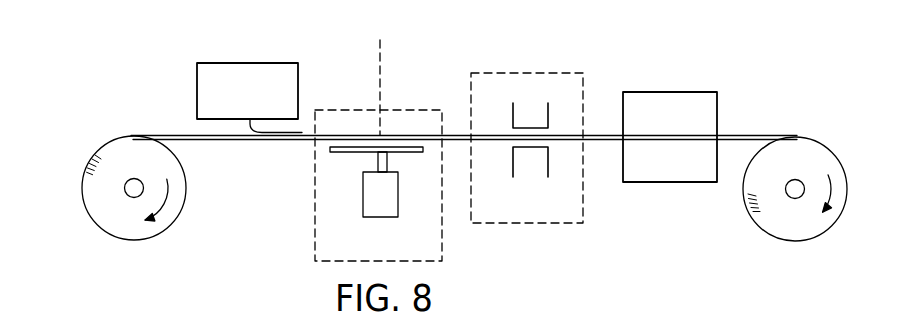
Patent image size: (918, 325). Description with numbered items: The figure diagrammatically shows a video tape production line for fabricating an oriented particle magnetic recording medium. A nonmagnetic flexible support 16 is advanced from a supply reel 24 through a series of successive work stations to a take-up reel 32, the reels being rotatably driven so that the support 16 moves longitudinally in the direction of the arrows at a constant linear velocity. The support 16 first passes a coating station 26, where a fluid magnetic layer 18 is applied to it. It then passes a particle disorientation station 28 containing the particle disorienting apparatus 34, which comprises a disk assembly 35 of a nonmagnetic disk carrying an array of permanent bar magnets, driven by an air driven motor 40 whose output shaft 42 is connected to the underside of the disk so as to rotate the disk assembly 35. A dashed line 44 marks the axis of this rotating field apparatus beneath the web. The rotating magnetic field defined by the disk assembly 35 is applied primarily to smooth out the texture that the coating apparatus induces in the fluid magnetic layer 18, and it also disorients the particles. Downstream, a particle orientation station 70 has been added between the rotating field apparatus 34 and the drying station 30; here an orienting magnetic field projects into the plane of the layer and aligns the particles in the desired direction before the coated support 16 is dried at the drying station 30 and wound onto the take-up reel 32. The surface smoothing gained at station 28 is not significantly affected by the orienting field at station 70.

The nonmagnetic flexible support 16 is at (225, 142).
The fluid magnetic layer 18 is at (303, 131).
The supply reel 24 is at (123, 147).
The coating station 26 is at (283, 63).
The particle disorientation station 28 is at (313, 240).
The drying station 30 is at (675, 172).
The take-up reel 32 is at (815, 230).
The particle disorienting apparatus 34 is at (354, 179).
The disk assembly 35 is at (396, 165).
The air driven motor 40 is at (387, 202).
The output shaft 42 is at (377, 161).
The centerline of disorientation station 44 is at (384, 84).
The particle orientation station 70 is at (494, 83).